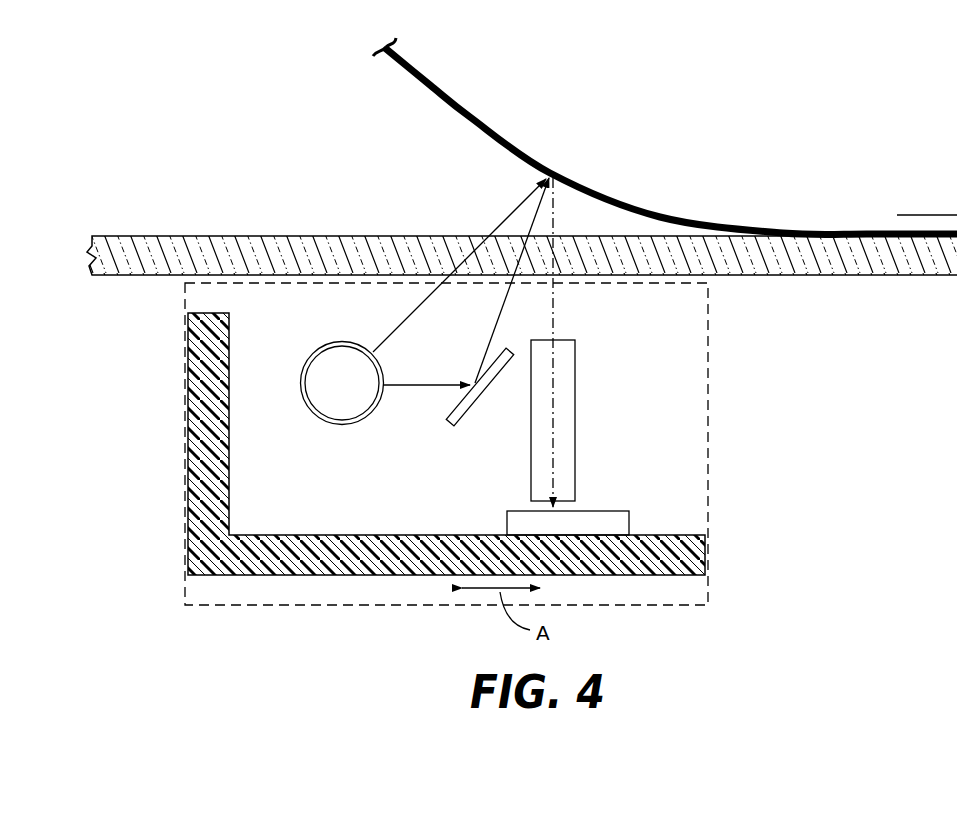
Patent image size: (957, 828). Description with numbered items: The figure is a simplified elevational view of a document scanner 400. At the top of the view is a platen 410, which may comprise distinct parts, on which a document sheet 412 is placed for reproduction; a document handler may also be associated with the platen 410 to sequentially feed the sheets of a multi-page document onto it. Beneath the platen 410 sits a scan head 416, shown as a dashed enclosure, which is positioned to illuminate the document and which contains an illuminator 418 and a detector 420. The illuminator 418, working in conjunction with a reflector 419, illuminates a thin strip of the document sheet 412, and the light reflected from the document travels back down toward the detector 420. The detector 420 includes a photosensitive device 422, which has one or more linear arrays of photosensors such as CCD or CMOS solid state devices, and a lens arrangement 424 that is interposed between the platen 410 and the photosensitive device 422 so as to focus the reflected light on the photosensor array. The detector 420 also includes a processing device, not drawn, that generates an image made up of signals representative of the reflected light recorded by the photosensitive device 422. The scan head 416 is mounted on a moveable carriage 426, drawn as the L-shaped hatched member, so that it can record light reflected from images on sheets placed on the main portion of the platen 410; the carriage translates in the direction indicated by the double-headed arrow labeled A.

The document scanner 400 is at (720, 135).
The platen 410 is at (793, 277).
The document sheet 412 is at (470, 117).
The scan head 416 is at (170, 467).
The illuminator 418 is at (345, 425).
The reflector 419 is at (452, 422).
The detector 420 is at (606, 402).
The photosensitive device 422 is at (602, 511).
The lens arrangement 424 is at (568, 340).
The moveable carriage 426 is at (387, 535).